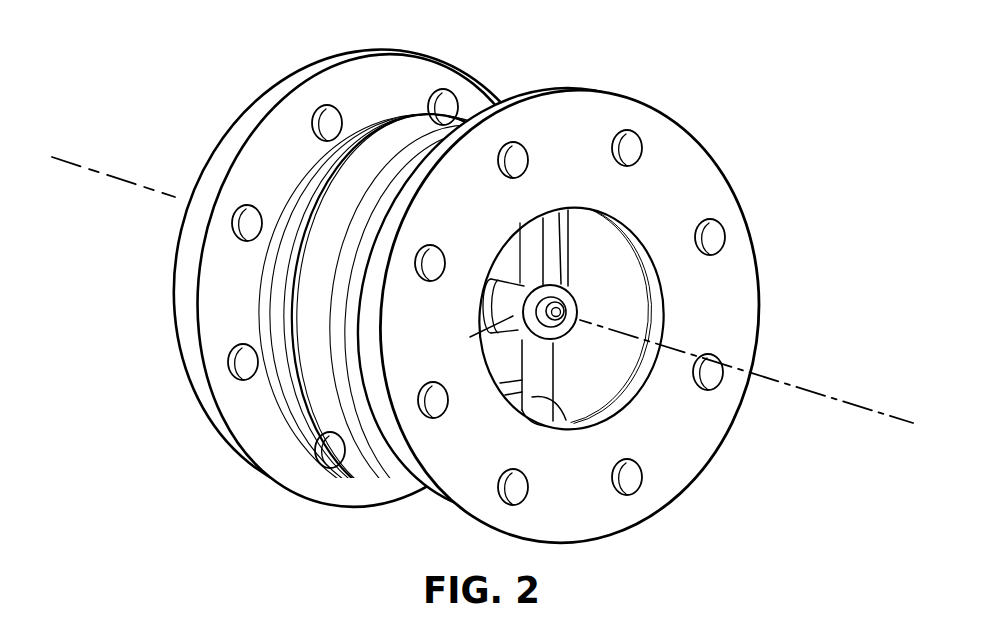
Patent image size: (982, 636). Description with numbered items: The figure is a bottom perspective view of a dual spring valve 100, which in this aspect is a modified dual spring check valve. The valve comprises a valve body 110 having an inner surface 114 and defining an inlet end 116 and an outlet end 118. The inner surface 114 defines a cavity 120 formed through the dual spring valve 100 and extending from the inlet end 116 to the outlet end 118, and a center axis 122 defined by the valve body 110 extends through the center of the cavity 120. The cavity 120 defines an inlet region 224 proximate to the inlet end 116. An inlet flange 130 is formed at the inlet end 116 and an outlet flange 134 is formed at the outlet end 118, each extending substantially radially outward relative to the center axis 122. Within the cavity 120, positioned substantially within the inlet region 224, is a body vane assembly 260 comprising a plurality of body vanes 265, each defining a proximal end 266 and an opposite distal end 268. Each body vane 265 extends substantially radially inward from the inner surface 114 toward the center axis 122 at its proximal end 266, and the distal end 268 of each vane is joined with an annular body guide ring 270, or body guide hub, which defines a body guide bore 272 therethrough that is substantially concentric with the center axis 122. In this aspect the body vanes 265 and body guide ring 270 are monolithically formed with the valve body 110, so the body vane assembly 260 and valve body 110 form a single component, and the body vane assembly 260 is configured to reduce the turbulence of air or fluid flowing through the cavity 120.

The dual spring valve 100 is at (475, 294).
The valve body 110 is at (318, 282).
The inner surface 114 is at (617, 383).
The inlet end 116 is at (562, 294).
The outlet end 118 is at (317, 274).
The cavity 120 is at (577, 243).
The center axis 122 is at (73, 160).
The inlet flange 130 is at (580, 122).
The outlet flange 134 is at (275, 155).
The inlet region 224 is at (597, 280).
The body vane assembly 260 is at (543, 353).
The body vanes 265 is at (537, 243).
The proximal end 266 is at (537, 413).
The distal end 268 is at (538, 358).
The body guide ring 270 is at (418, 383).
The body guide bore 272 is at (579, 306).